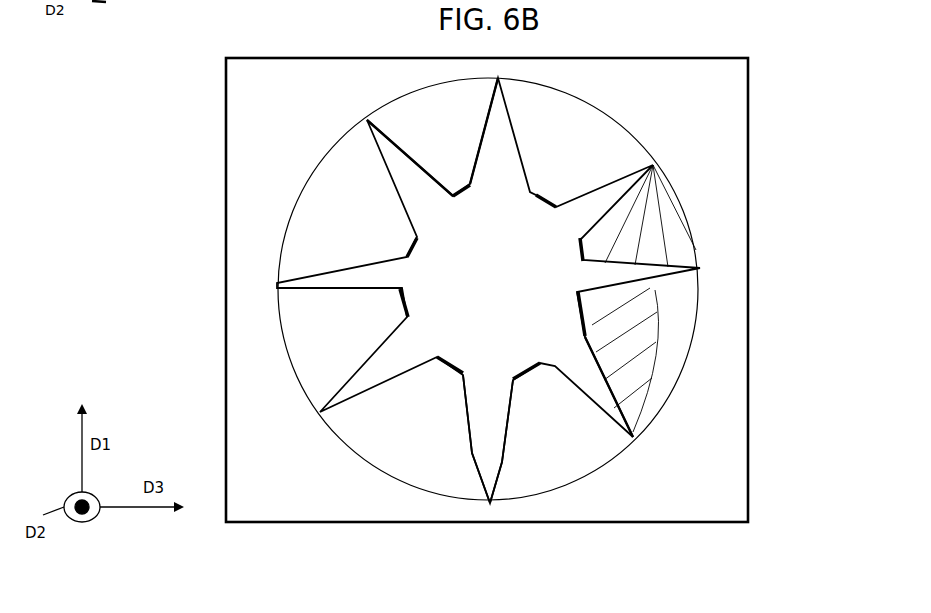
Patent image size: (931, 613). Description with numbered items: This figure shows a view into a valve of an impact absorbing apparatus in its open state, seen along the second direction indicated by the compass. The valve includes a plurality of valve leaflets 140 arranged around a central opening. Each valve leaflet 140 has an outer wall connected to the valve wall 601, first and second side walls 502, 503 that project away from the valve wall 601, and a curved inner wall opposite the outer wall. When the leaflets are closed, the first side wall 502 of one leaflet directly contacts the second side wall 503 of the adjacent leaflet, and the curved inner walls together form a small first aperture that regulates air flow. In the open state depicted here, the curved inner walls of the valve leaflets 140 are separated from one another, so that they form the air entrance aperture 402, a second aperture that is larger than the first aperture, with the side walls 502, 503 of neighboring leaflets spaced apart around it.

The valve leaflet 140 is at (647, 339).
The air entrance aperture 402 is at (507, 267).
The first side wall 502 is at (505, 465).
The second side wall 503 is at (462, 465).
The valve wall 601 is at (681, 181).